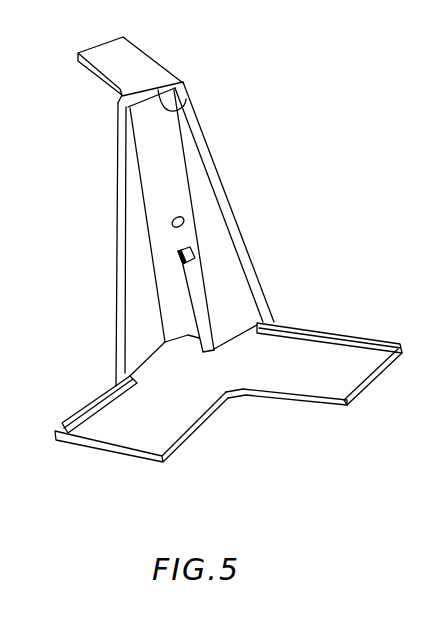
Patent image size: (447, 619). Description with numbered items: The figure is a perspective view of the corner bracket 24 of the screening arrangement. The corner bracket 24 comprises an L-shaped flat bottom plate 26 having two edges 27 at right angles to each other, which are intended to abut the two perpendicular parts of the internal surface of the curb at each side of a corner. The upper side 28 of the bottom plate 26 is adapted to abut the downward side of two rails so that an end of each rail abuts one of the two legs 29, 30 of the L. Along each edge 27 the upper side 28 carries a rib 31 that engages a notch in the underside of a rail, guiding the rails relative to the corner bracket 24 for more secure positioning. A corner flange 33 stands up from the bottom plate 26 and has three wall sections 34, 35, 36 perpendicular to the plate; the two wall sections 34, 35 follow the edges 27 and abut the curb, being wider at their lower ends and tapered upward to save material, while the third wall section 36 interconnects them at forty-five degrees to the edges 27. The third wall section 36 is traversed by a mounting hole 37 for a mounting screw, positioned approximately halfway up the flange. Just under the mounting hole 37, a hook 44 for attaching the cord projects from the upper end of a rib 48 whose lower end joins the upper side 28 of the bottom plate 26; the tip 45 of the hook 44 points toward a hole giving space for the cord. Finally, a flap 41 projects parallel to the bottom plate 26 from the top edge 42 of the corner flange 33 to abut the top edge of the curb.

The corner bracket 24 is at (110, 296).
The L-shaped flat bottom plate 26 is at (229, 404).
The edges 27 is at (102, 398).
The upper side 28 is at (324, 382).
The leg 29 is at (132, 437).
The leg 30 is at (356, 380).
The ribs 31 is at (81, 424).
The corner flange 33 is at (232, 180).
The wall section 34 is at (132, 197).
The wall section 35 is at (235, 270).
The third wall section 36 is at (175, 148).
The mounting hole 37 is at (187, 222).
The flap 41 is at (158, 52).
The top edge 42 is at (185, 107).
The hook 44 is at (183, 271).
The tip 45 is at (190, 253).
The rib 48 is at (211, 328).